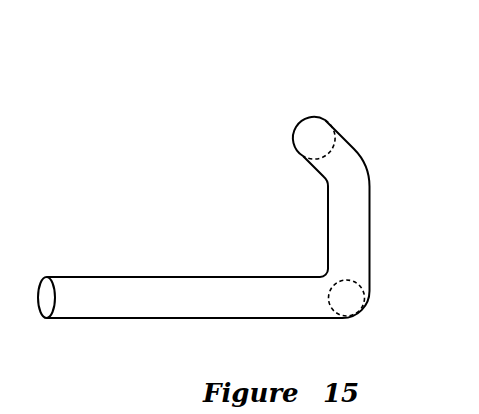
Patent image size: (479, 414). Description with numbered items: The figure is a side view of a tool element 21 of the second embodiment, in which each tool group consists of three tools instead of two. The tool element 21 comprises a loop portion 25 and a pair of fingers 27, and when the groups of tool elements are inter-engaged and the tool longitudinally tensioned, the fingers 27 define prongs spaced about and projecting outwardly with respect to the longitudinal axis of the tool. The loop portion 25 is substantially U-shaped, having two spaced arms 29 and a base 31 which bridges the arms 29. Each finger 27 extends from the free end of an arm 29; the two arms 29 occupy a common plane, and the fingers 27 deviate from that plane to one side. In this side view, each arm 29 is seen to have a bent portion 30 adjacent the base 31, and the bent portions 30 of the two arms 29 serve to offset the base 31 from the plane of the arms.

The tool element 21 is at (298, 112).
The loop portion 25 is at (372, 197).
The finger 27 is at (116, 271).
The arm 29 is at (363, 257).
The bent portion 30 is at (343, 152).
The base 31 is at (290, 140).